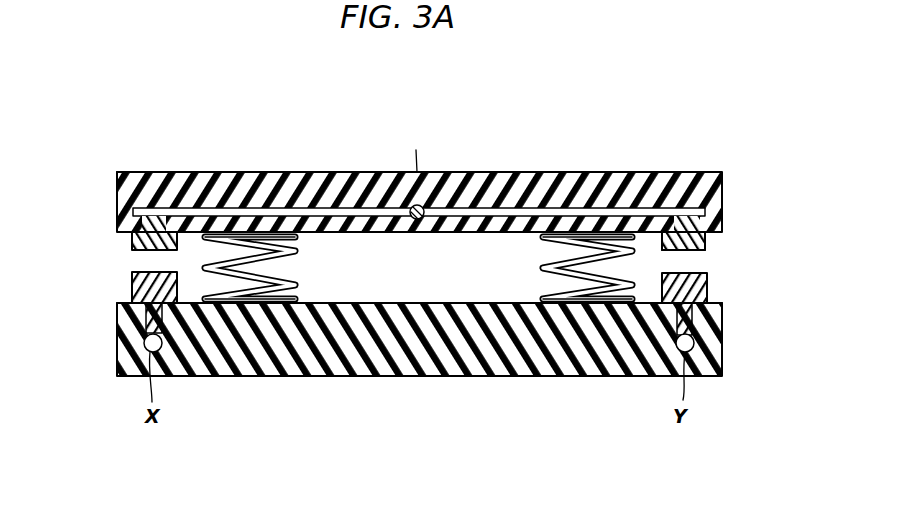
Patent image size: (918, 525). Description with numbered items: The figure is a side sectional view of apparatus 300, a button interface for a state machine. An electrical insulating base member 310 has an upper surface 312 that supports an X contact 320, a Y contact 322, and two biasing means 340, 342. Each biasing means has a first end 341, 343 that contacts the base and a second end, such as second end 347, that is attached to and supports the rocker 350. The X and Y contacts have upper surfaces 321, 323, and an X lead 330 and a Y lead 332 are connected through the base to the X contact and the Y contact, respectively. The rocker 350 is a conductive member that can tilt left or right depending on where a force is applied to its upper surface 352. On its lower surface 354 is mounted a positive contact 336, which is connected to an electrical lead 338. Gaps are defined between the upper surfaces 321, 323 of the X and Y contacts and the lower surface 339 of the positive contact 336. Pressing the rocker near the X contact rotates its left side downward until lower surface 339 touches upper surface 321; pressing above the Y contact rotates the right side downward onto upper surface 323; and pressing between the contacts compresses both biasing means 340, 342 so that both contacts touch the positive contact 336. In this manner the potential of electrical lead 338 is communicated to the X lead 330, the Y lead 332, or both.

The apparatus 300 is at (696, 110).
The electrical insulating base member 310 is at (414, 376).
The upper surface 312 is at (434, 303).
The X contact 320 is at (138, 315).
The upper surface 321 is at (135, 282).
The Y contact 322 is at (718, 322).
The upper surface 323 is at (702, 284).
The X lead 330 is at (145, 348).
The Y lead 332 is at (677, 348).
The positive contact 336 is at (130, 240).
The electrical lead 338 is at (422, 208).
The lower surface 339 is at (703, 254).
The biasing means 340 is at (293, 252).
The first end 341 is at (262, 305).
The biasing means 342 is at (545, 262).
The first end 343 is at (278, 234).
The second end 347 is at (618, 234).
The rocker 350 is at (366, 172).
The upper surface 352 is at (242, 172).
The lower surface 354 is at (386, 234).